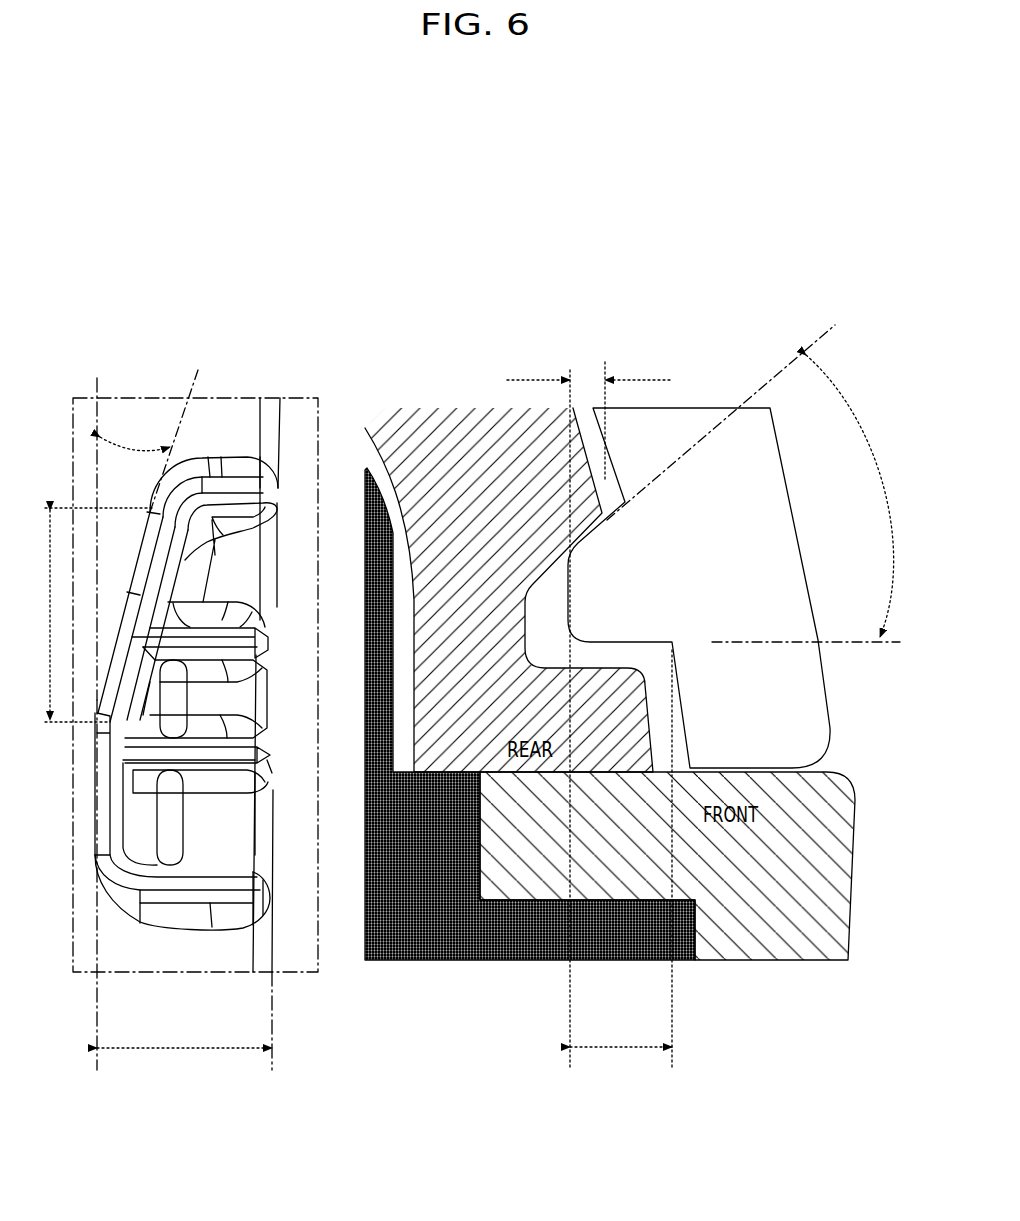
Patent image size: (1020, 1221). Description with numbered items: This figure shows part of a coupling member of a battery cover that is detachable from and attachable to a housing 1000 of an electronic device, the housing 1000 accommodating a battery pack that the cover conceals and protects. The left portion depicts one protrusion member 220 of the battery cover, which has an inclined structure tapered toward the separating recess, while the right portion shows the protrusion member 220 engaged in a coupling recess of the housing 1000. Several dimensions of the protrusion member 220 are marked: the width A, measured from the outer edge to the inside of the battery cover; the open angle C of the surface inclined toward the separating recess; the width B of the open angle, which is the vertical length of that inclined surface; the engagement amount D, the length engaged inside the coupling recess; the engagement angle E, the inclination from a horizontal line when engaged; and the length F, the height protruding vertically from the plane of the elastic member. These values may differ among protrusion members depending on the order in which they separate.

The protrusion member 220 is at (223, 478).
The housing 1000 is at (482, 472).
The width of the protrusion member A is at (184, 885).
The width of the open angle B is at (93, 615).
The open angle C is at (133, 539).
The engagement amount D is at (588, 487).
The engagement angle E is at (755, 483).
The length of the protrusion member F is at (621, 855).